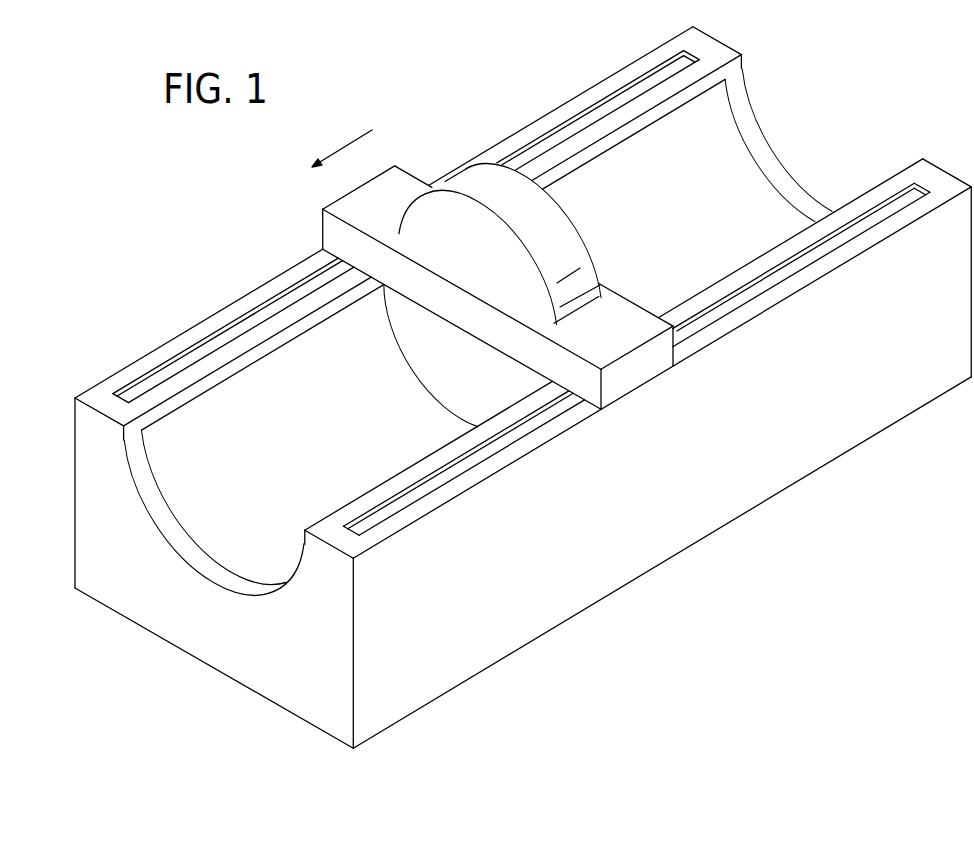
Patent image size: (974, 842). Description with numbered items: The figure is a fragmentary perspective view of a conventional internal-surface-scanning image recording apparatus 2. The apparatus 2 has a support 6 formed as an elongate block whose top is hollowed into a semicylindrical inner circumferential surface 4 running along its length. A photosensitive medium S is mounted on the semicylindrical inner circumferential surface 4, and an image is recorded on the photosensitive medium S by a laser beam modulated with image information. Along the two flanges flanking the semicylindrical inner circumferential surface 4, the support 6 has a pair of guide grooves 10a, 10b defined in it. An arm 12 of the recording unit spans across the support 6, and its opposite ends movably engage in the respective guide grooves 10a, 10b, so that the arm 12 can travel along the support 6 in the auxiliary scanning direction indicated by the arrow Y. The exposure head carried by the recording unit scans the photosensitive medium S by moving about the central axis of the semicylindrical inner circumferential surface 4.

The internal-surface-scanning image recording apparatus 2 is at (143, 229).
The semicylindrical inner circumferential surface 4 is at (182, 545).
The support 6 is at (462, 668).
The guide groove 10a is at (621, 76).
The guide groove 10b is at (879, 205).
The arm 12 is at (398, 203).
The photosensitive medium S is at (220, 497).
The auxiliary scanning direction Y is at (342, 141).